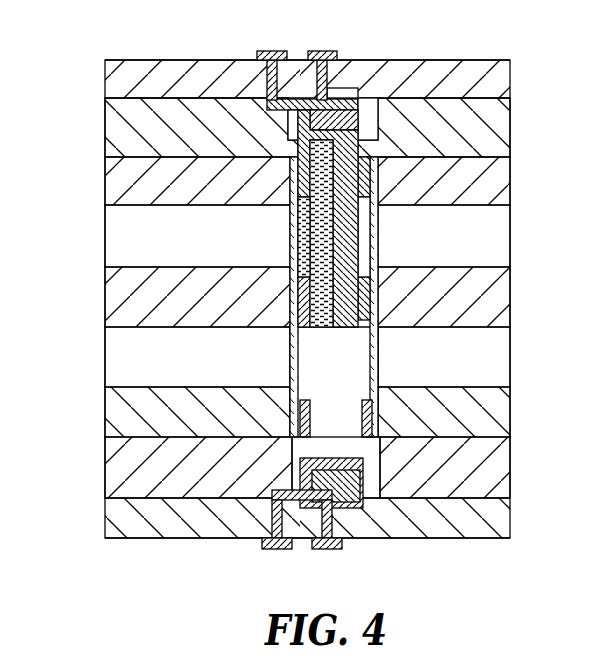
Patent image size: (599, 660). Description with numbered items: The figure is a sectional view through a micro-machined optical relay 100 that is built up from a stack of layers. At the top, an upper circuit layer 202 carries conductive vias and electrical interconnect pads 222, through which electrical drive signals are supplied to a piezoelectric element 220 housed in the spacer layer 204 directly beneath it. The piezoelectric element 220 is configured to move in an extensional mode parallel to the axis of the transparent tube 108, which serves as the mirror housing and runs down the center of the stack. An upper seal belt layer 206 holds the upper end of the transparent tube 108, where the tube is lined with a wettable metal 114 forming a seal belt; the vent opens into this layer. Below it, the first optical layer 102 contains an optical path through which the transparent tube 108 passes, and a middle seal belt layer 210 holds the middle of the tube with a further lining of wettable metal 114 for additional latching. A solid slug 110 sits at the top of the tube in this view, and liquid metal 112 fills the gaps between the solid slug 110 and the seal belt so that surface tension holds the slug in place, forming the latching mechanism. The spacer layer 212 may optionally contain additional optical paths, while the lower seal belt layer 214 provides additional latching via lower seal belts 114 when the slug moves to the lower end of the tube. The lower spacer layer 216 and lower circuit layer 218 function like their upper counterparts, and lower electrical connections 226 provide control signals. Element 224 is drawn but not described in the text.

The optical relay 100 is at (63, 183).
The first optical layer 102 is at (510, 236).
The transparent tube 108 is at (290, 373).
The solid slug 110 is at (350, 221).
The liquid metal 112 is at (335, 251).
The wettable metal 114 is at (290, 205).
The upper circuit layer 202 is at (510, 79).
The spacer layer 204 is at (510, 128).
The upper seal belt layer 206 is at (510, 181).
The middle seal belt layer 210 is at (510, 297).
The spacer layer 212 is at (510, 357).
The lower seal belt layer 214 is at (510, 412).
The lower spacer layer 216 is at (510, 465).
The lower circuit layer 218 is at (510, 518).
The piezoelectric element 220 is at (362, 93).
The electrical interconnect pads 222 is at (320, 51).
The lower pad 224 is at (362, 506).
The lower electrical connections 226 is at (327, 549).